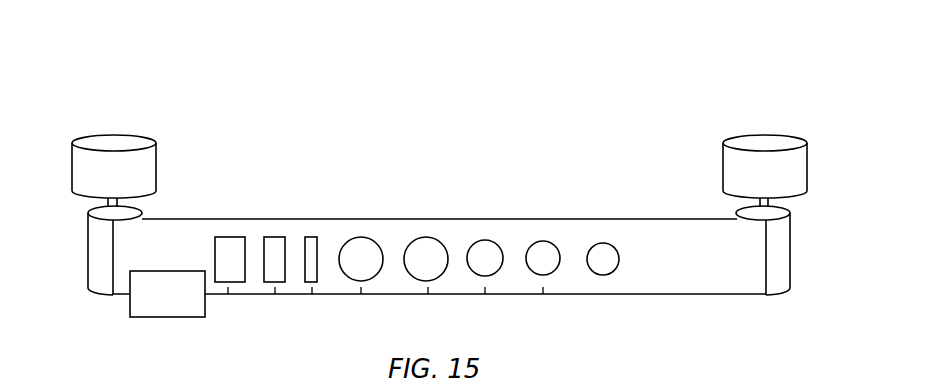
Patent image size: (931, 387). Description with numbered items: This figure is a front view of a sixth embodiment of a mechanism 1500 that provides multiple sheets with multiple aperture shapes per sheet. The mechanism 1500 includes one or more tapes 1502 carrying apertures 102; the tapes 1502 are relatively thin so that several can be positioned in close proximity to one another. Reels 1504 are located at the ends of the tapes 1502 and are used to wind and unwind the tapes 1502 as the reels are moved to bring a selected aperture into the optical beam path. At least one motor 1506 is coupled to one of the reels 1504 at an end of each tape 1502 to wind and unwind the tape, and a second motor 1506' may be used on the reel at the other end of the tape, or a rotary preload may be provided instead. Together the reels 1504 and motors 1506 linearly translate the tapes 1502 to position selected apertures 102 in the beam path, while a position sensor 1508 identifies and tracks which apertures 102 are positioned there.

The mechanism 1500 is at (203, 69).
The tape 1502 is at (397, 294).
The reel 1504 is at (131, 216).
The motor 1506 is at (114, 148).
The second motor 1506' is at (765, 147).
The position sensor 1508 is at (167, 294).
The aperture 102 is at (430, 248).